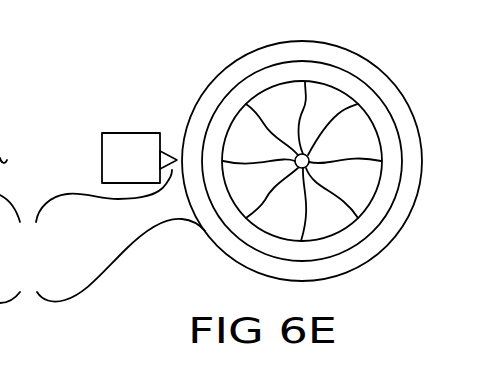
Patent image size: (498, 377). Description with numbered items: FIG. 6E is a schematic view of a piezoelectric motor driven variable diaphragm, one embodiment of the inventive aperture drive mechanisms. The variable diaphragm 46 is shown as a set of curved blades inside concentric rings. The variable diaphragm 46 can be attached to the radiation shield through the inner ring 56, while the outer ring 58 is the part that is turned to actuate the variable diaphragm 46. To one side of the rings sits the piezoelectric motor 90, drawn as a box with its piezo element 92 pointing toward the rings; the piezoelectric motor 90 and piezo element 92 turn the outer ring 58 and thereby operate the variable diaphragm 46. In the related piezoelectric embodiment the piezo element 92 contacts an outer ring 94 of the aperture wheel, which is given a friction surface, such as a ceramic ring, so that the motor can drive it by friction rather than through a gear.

The variable diaphragm 46 is at (266, 26).
The inner ring 56 is at (223, 118).
The outer ring 58 is at (193, 145).
The piezoelectric motor 90 is at (101, 161).
The piezo element 92 is at (86, 213).
The outer ring 94 is at (102, 261).